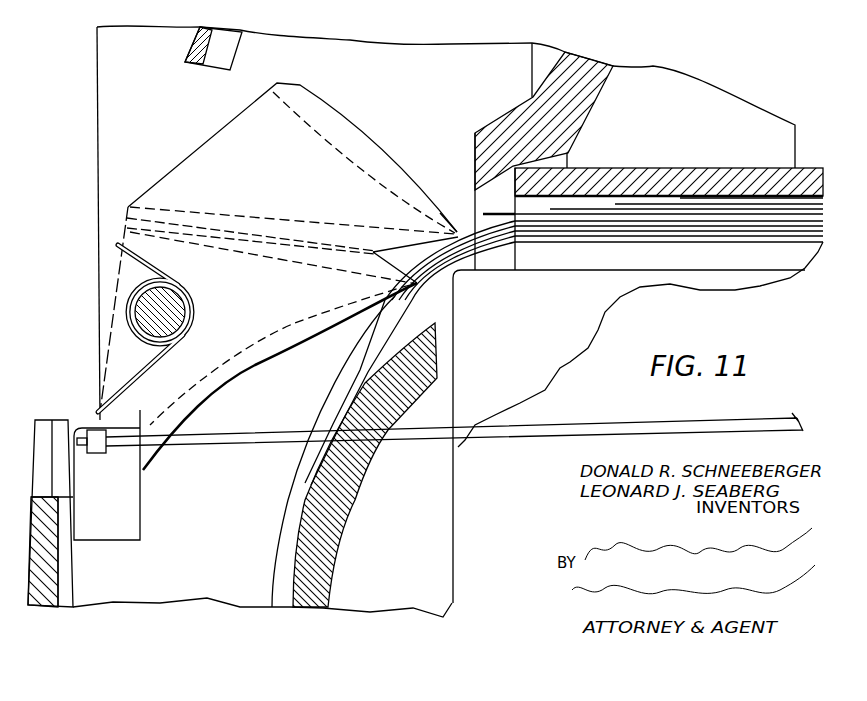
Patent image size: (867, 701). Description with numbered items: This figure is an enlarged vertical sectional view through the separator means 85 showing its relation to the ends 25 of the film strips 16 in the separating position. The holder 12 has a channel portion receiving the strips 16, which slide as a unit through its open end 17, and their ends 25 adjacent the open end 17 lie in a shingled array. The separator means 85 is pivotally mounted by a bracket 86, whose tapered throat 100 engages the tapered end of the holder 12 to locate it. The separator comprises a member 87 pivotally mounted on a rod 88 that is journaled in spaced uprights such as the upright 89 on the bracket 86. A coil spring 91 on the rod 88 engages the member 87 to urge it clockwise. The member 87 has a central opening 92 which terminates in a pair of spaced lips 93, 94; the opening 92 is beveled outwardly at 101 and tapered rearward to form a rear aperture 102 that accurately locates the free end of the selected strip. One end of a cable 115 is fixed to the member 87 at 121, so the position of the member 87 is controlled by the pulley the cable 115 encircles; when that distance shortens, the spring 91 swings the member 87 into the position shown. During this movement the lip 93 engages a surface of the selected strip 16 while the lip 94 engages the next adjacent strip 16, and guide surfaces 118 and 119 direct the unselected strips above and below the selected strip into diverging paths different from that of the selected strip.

The holder 12 is at (685, 168).
The film strips 16 is at (713, 223).
The open end 17 is at (512, 253).
The ends of the strips 25 is at (423, 290).
The separator means 85 is at (141, 171).
The bracket 86 is at (366, 483).
The member 87 is at (222, 132).
The rod 88 is at (128, 308).
The upright 89 is at (120, 92).
The coil spring 91 is at (140, 283).
The central opening 92 is at (330, 247).
The lip 93 is at (456, 229).
The lip 94 is at (375, 316).
The tapered throat 100 is at (558, 163).
The beveled portion 101 is at (287, 258).
The rear aperture 102 is at (128, 209).
The cable 115 is at (533, 420).
The guide surface 118 is at (333, 145).
The guide surface 119 is at (258, 366).
The cable attachment point 121 is at (93, 453).